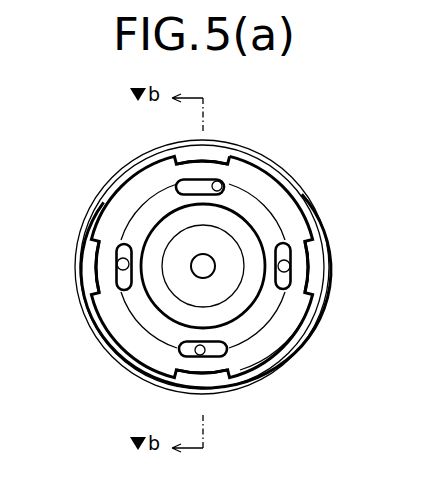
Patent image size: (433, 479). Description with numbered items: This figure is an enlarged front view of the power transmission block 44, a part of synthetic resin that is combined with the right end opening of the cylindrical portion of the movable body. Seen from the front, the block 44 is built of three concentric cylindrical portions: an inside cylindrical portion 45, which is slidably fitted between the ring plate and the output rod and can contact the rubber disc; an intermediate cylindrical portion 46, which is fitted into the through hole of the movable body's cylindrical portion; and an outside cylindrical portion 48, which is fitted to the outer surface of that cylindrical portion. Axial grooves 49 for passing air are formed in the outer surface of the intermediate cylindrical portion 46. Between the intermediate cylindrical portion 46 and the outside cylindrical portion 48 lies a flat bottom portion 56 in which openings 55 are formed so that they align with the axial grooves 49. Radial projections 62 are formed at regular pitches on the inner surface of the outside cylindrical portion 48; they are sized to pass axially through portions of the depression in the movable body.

The power transmission block 44 is at (291, 164).
The inside cylindrical portion 45 is at (281, 353).
The intermediate cylindrical portion 46 is at (307, 336).
The outside cylindrical portion 48 is at (314, 318).
The axial grooves 49 is at (222, 184).
The openings 55 is at (208, 181).
The flat bottom portion 56 is at (266, 203).
The radial projections 62 is at (176, 152).